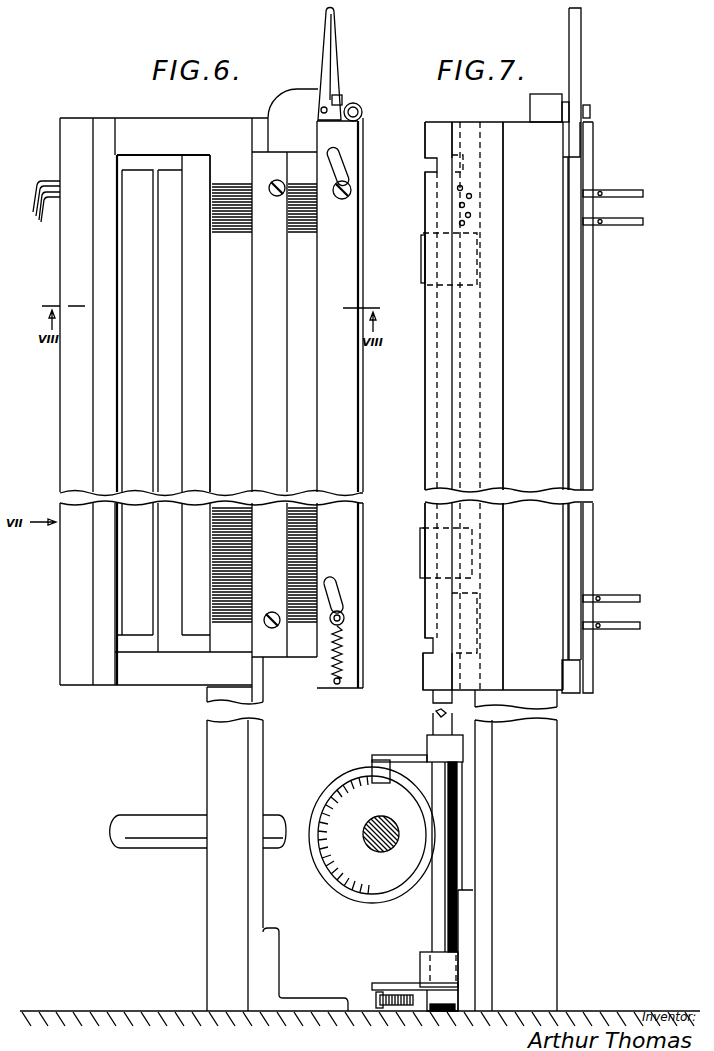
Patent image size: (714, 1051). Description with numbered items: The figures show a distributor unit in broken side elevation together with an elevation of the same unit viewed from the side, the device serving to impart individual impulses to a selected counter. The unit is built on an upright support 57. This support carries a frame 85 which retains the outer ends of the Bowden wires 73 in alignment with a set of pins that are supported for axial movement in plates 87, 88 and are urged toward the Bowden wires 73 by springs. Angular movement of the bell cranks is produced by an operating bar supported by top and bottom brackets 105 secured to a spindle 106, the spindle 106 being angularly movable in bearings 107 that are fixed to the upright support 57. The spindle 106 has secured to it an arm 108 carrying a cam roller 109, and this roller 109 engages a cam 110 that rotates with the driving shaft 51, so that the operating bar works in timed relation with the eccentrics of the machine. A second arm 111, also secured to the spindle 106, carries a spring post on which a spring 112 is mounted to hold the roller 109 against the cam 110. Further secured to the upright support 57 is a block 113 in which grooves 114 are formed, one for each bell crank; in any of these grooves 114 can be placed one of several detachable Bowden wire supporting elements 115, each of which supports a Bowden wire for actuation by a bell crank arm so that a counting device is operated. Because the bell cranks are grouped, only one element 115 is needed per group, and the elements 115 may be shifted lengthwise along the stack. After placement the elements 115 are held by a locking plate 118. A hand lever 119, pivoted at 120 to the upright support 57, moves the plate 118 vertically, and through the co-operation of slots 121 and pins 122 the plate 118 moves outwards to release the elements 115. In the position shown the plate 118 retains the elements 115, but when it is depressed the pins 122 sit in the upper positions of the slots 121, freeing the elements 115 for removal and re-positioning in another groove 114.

In FIG. 6, the driving shaft 51 is at (270, 817).
In FIG. 7, the driving shaft 51 is at (380, 851).
In FIG. 6, the upright support 57 is at (256, 895).
In FIG. 7, the upright support 57 is at (540, 865).
In FIG. 6, the Bowden wires 73 is at (43, 210).
In FIG. 7, the Bowden wires 73 is at (470, 214).
In FIG. 6, the frame 85 is at (110, 130).
In FIG. 7, the frame 85 is at (538, 365).
In FIG. 6, the plate 87 is at (121, 207).
In FIG. 7, the plate 87 is at (427, 215).
In FIG. 6, the plate 88 is at (153, 268).
In FIG. 7, the brackets 105 is at (422, 277).
In FIG. 7, the spindle 106 is at (436, 714).
In FIG. 7, the bearings 107 is at (425, 138).
In FIG. 7, the arm 108 is at (428, 756).
In FIG. 7, the cam roller 109 is at (376, 765).
In FIG. 7, the cam 110 is at (350, 784).
In FIG. 7, the second arm 111 is at (380, 984).
In FIG. 7, the spring 112 is at (404, 993).
In FIG. 6, the block 113 is at (228, 162).
In FIG. 6, the grooves 114 is at (236, 236).
In FIG. 7, the Bowden wire supporting elements 115 is at (634, 218).
In FIG. 6, the locking plate 118 is at (350, 255).
In FIG. 6, the hand lever 119 is at (326, 40).
In FIG. 7, the hand lever 119 is at (572, 42).
In FIG. 6, the pivot 120 is at (340, 106).
In FIG. 6, the slots 121 is at (340, 160).
In FIG. 6, the pins 122 is at (351, 190).